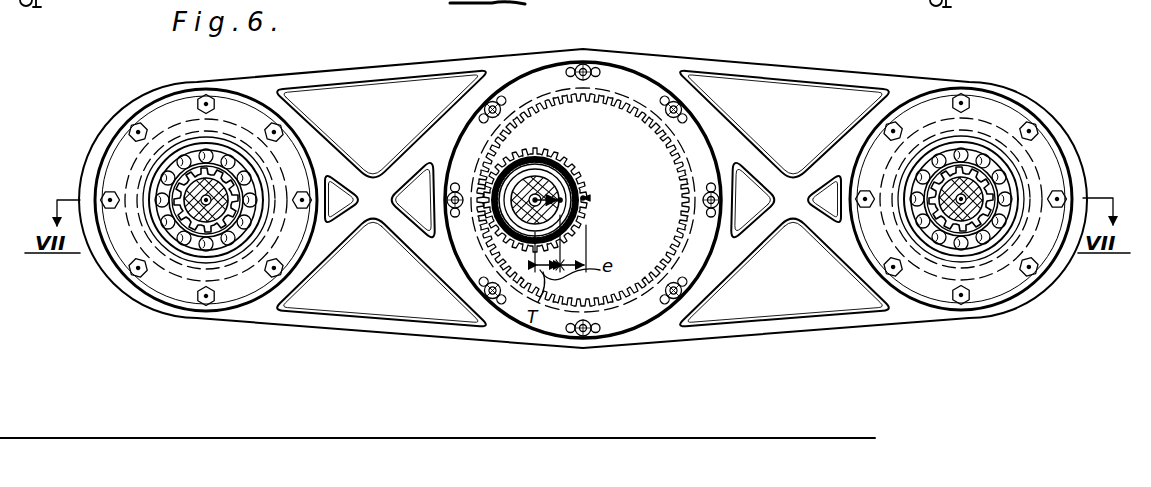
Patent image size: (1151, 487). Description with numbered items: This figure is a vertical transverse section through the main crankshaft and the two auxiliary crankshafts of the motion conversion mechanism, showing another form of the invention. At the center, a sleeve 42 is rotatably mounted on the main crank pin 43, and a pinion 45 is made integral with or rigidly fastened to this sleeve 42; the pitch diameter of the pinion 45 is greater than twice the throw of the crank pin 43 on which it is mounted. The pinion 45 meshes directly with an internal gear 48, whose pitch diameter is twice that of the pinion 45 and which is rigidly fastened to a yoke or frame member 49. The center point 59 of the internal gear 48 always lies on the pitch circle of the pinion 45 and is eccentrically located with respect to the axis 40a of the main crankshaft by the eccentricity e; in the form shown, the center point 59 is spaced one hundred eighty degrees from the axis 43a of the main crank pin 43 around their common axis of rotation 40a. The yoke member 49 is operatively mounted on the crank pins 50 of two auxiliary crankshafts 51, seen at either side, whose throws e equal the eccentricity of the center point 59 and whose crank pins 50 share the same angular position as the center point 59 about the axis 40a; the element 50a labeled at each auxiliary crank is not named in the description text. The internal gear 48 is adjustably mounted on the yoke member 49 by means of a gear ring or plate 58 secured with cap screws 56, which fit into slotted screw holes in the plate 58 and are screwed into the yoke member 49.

The internal gear 48 is at (543, 100).
The cap screws 56 is at (583, 66).
The yoke or frame member 49 is at (648, 60).
The gear ring or plate 58 is at (692, 125).
The auxiliary crankshafts 51 is at (592, 84).
The pinion 45 is at (537, 152).
The sleeve 42 is at (570, 170).
The crank pin 43 is at (557, 181).
The center point 59 is at (588, 198).
The axis of the main crankshaft 40a is at (586, 220).
The axis of the main crank pin 43a is at (512, 217).
The crank pins 50 is at (192, 186).
The wheel bearing 50a is at (186, 207).